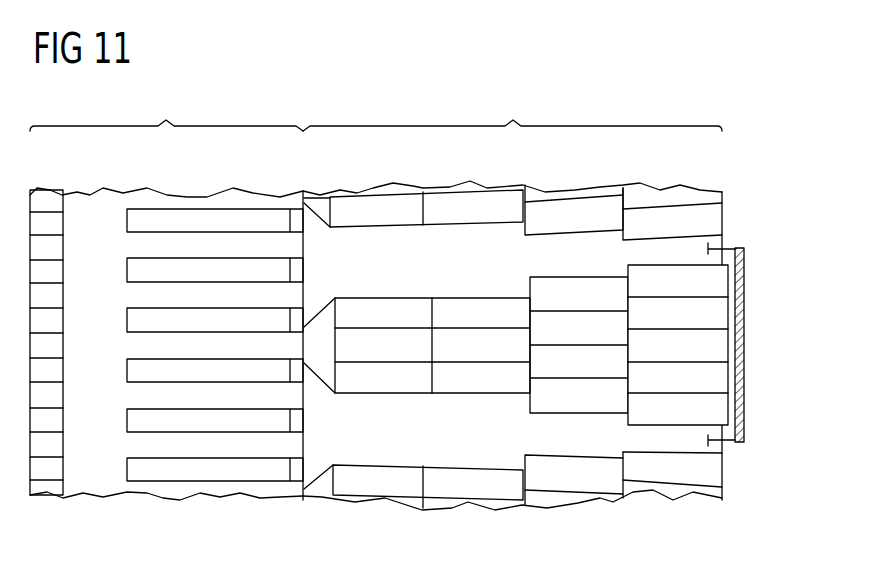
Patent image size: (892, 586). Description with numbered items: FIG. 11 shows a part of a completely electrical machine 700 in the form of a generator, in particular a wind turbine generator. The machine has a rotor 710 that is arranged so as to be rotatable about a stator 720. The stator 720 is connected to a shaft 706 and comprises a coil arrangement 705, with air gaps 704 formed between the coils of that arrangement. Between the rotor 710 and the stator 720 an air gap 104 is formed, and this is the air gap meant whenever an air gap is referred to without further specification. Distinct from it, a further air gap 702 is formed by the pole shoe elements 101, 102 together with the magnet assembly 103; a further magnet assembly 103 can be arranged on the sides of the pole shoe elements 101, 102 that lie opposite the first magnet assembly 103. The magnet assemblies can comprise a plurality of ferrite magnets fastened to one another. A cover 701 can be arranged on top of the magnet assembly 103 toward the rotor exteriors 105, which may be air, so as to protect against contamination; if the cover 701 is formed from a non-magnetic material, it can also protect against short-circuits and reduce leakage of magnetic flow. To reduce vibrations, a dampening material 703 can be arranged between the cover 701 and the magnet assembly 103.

The electrical machine 700 is at (783, 152).
The rotor 710 is at (512, 110).
The stator 720 is at (166, 110).
The cover 701 is at (740, 370).
The air gap 702 is at (322, 342).
The dampening material 703 is at (740, 305).
The air gaps 704 is at (197, 470).
The coil arrangement 705 is at (97, 485).
The shaft 706 is at (52, 343).
The pole shoe element 101 is at (457, 455).
The pole shoe element 102 is at (450, 237).
The magnet assembly 103 is at (652, 197).
The air gap 104 is at (289, 236).
The rotor exterior 105 is at (768, 262).